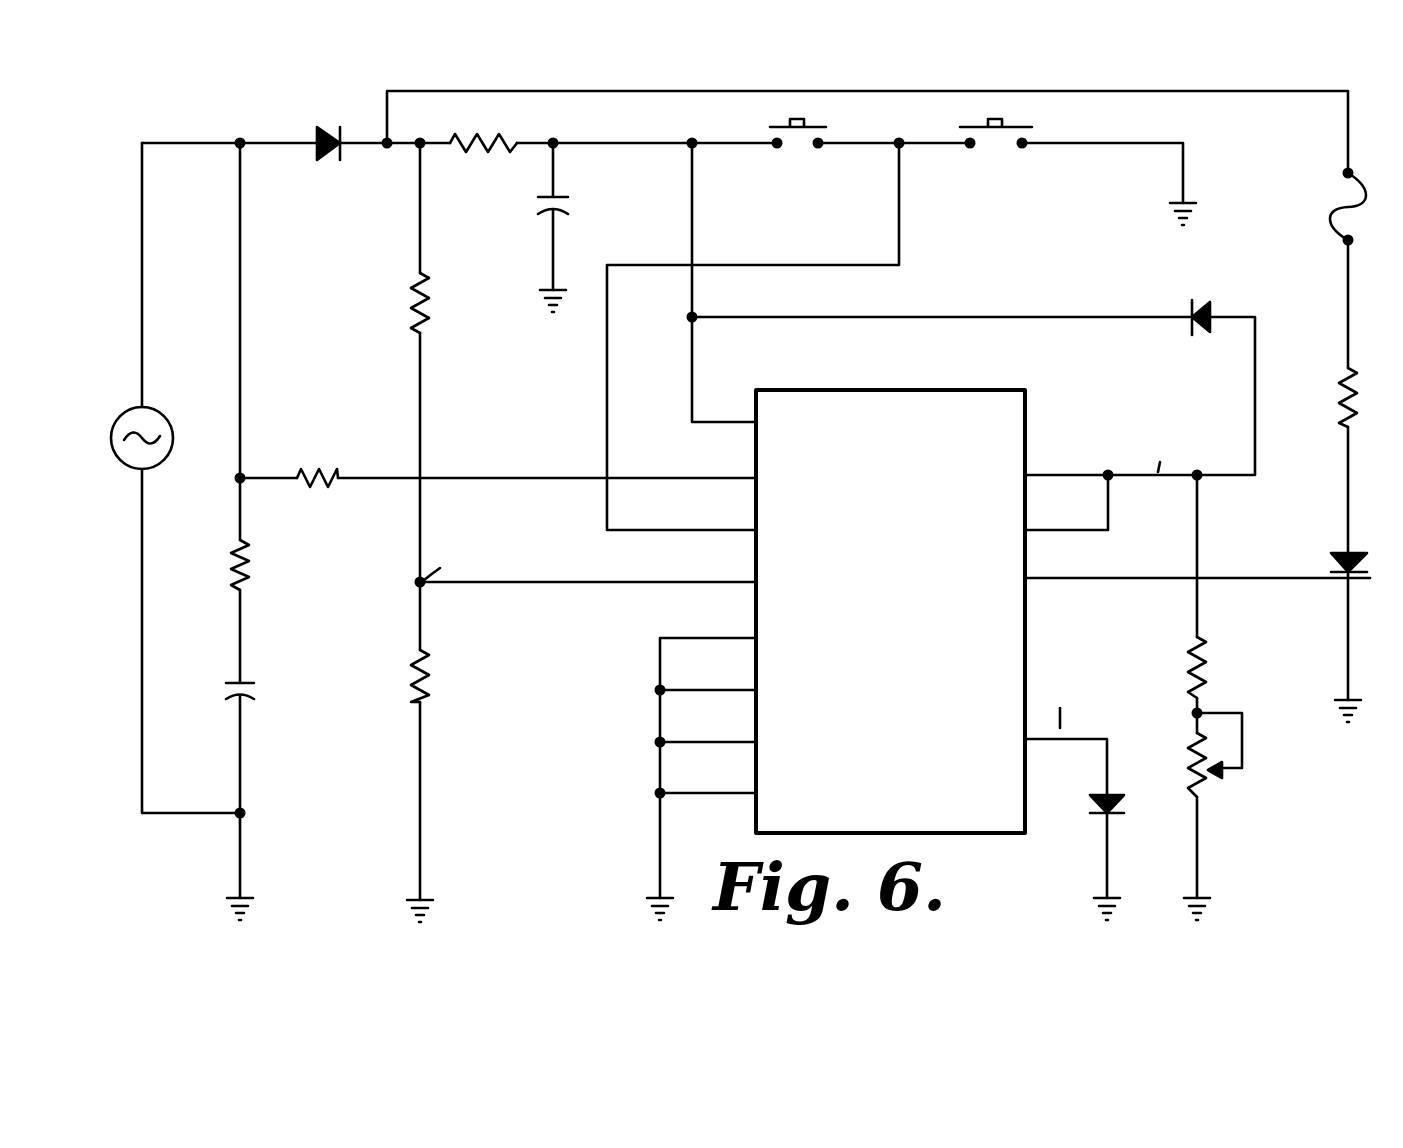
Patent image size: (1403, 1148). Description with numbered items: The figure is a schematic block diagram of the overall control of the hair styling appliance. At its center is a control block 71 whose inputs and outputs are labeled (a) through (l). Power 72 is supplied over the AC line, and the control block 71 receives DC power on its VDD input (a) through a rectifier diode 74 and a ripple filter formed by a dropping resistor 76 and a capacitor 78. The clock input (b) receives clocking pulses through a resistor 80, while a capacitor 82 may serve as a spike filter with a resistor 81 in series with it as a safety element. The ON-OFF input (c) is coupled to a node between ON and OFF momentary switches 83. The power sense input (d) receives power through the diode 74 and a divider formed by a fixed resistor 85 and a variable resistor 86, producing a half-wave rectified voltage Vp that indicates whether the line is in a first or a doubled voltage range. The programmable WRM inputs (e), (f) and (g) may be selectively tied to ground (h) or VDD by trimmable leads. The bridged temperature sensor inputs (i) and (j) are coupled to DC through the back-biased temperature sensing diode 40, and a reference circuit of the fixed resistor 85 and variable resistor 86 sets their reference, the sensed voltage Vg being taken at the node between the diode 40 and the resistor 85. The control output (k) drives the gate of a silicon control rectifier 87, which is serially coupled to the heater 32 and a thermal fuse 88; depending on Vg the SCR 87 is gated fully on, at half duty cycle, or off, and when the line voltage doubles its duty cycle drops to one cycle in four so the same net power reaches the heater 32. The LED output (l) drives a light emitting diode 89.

The control block 71 is at (945, 818).
The power 72 is at (163, 418).
The rectifier diode 74 is at (328, 127).
The dropping resistor 76 is at (470, 142).
The capacitor 78 is at (549, 210).
The resistor 80 is at (323, 469).
The resistor 81 is at (230, 548).
The capacitor 82 is at (230, 697).
The ON momentary switch 83 is at (772, 131).
The fixed resistor 85 is at (412, 288).
The variable resistor 86 is at (412, 700).
The silicon control rectifier 87 is at (1330, 565).
The thermal fuse 88 is at (1338, 201).
The light emitting diode 89 is at (1095, 806).
The temperature sensing diode 40 is at (1192, 327).
The heater 32 is at (1340, 411).